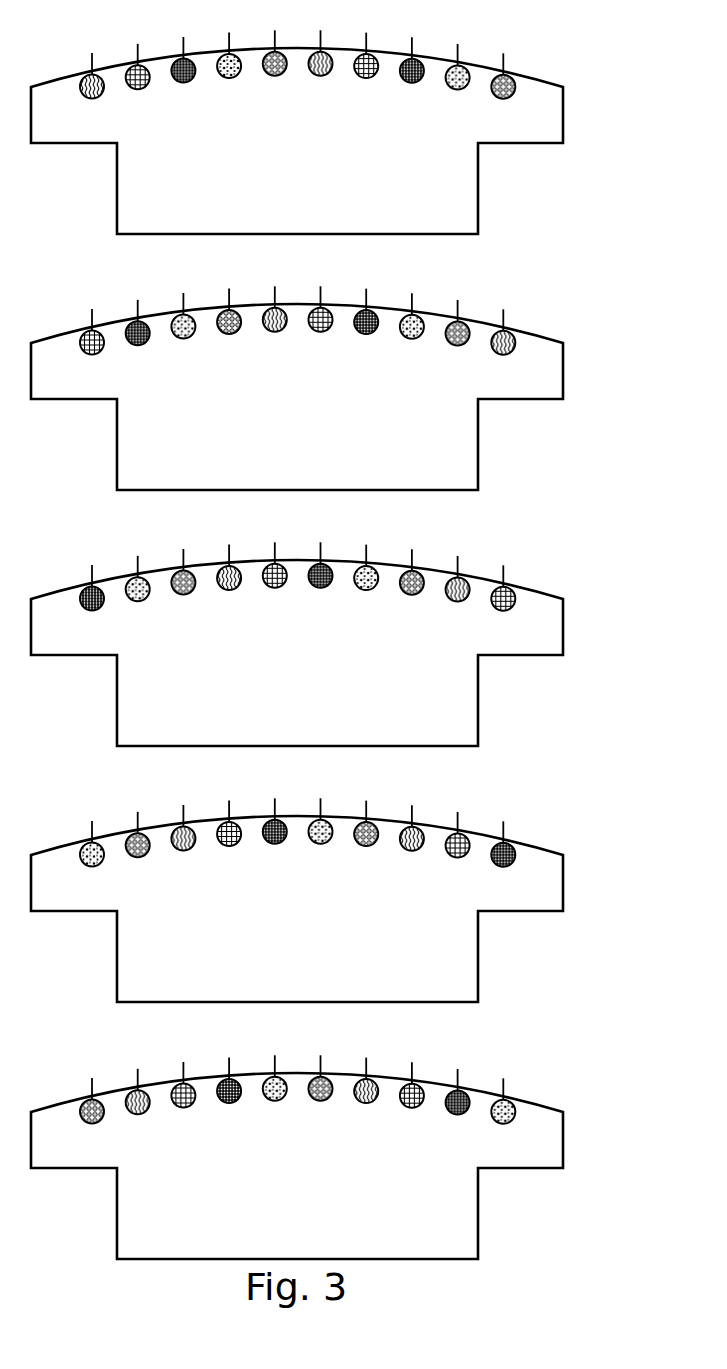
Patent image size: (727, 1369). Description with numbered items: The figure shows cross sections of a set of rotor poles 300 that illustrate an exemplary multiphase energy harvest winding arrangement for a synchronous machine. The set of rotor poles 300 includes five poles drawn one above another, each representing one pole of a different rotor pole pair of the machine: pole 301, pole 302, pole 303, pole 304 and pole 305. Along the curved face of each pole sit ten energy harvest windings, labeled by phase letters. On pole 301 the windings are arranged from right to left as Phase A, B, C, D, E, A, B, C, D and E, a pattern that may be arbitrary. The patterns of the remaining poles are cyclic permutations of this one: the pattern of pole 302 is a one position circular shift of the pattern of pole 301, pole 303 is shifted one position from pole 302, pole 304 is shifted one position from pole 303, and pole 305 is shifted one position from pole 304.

The set of rotor poles 300 is at (349, 631).
The pole 301 is at (563, 87).
The pole 302 is at (309, 375).
The pole 303 is at (309, 631).
The pole 304 is at (309, 887).
The pole 305 is at (309, 1144).